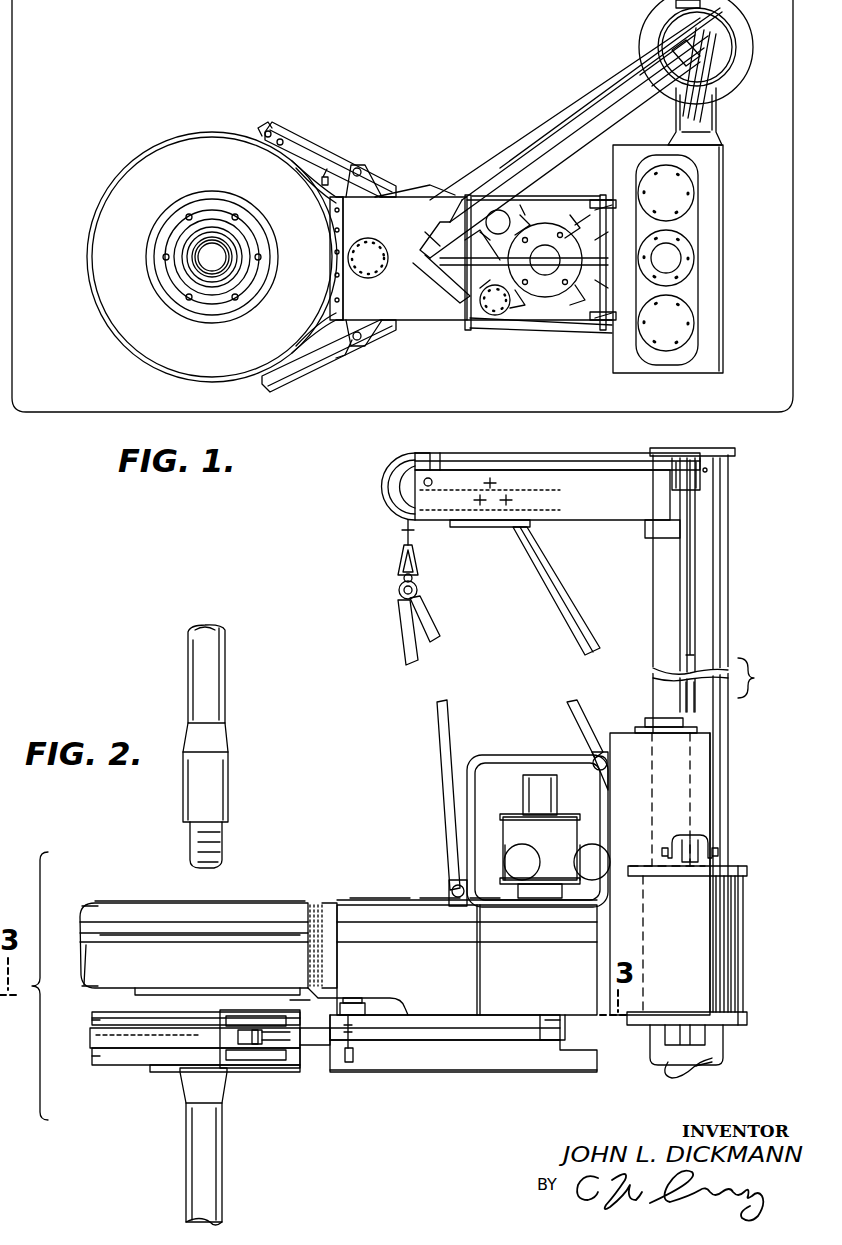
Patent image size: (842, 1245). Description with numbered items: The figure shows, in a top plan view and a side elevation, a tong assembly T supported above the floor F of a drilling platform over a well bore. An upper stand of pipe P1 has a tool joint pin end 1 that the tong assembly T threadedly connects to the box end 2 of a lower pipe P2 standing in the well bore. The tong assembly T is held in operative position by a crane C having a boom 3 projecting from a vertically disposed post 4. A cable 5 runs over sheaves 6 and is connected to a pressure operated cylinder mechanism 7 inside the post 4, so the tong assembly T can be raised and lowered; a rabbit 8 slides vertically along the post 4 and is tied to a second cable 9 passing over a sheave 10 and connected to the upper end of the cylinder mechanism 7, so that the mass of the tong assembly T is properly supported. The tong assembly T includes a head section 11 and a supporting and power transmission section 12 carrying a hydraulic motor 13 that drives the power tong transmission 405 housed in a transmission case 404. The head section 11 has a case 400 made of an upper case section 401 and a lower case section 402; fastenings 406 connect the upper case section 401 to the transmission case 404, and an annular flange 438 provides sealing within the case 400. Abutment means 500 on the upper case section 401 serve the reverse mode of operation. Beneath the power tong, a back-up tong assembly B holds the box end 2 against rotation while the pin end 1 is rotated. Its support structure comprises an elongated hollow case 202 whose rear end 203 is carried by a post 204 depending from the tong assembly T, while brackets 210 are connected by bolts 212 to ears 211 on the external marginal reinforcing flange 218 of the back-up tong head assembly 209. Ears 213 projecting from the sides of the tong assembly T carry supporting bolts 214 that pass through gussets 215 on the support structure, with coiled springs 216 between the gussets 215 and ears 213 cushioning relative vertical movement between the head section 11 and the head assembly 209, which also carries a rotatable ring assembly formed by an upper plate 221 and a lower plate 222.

In FIG. 1, the tool joint pin end 1 is at (212, 257).
In FIG. 2, the tool joint pin end 1 is at (230, 802).
In FIG. 2, the box end 2 is at (182, 1075).
In FIG. 1, the boom 3 is at (510, 162).
In FIG. 2, the boom 3 is at (578, 512).
In FIG. 1, the post 4 is at (732, 45).
In FIG. 2, the post 4 is at (730, 552).
In FIG. 1, the cable 5 is at (560, 135).
In FIG. 2, the cable 5 is at (402, 528).
In FIG. 1, the sheaves 6 is at (680, 40).
In FIG. 2, the sheaves 6 is at (396, 480).
In FIG. 2, the pressure operated cylinder mechanism 7 is at (665, 1070).
In FIG. 2, the rabbit 8 is at (742, 933).
In FIG. 1, the second cable 9 is at (707, 68).
In FIG. 2, the second cable 9 is at (694, 608).
In FIG. 1, the sheave 10 is at (700, 105).
In FIG. 2, the sheave 10 is at (694, 478).
In FIG. 1, the head section 11 is at (208, 128).
In FIG. 2, the head section 11 is at (110, 900).
In FIG. 1, the supporting and power transmission section 12 is at (600, 355).
In FIG. 2, the supporting and power transmission section 12 is at (592, 1012).
In FIG. 1, the hydraulic motor 13 is at (548, 300).
In FIG. 2, the hydraulic motor 13 is at (515, 820).
In FIG. 2, the elongated hollow case 202 is at (458, 1060).
In FIG. 2, the rear end 203 is at (560, 1065).
In FIG. 2, the post 204 is at (528, 995).
In FIG. 2, the back-up tong head assembly 209 is at (88, 1050).
In FIG. 1, the brackets 210 is at (335, 358).
In FIG. 2, the brackets 210 is at (300, 1046).
In FIG. 2, the ears 211 is at (250, 1046).
In FIG. 1, the bolts 212 is at (290, 130).
In FIG. 1, the ears 213 is at (372, 325).
In FIG. 2, the ears 213 is at (365, 1003).
In FIG. 1, the supporting bolts 214 is at (358, 165).
In FIG. 2, the supporting bolts 214 is at (356, 1062).
In FIG. 1, the gussets 215 is at (318, 152).
In FIG. 2, the gussets 215 is at (365, 1038).
In FIG. 2, the coiled springs 216 is at (358, 1022).
In FIG. 2, the external marginal reinforcing flange 218 is at (120, 1067).
In FIG. 2, the upper plate 221 is at (125, 1020).
In FIG. 2, the lower plate 222 is at (168, 1067).
In FIG. 1, the housing or case 400 is at (185, 165).
In FIG. 2, the housing or case 400 is at (292, 928).
In FIG. 1, the upper case section 401 is at (88, 240).
In FIG. 2, the upper case section 401 is at (94, 918).
In FIG. 2, the lower case section 402 is at (90, 970).
In FIG. 1, the transmission case 404 is at (436, 312).
In FIG. 1, the power tong transmission 405 is at (428, 210).
In FIG. 2, the power tong transmission 405 is at (358, 948).
In FIG. 1, the fastenings 406 is at (318, 205).
In FIG. 1, the annular flange 438 is at (163, 290).
In FIG. 2, the annular flange 438 is at (153, 903).
In FIG. 1, the abutment means 500 is at (330, 228).
In FIG. 1, the back-up tong assembly B is at (641, 18).
In FIG. 2, the back-up tong assembly B is at (130, 1067).
In FIG. 1, the crane C is at (612, 72).
In FIG. 2, the crane C is at (640, 530).
In FIG. 1, the floor F is at (42, 416).
In FIG. 1, the tong assembly T is at (400, 190).
In FIG. 2, the tong assembly T is at (398, 905).
In FIG. 1, the upper stand of pipe P1 is at (212, 257).
In FIG. 2, the upper stand of pipe P1 is at (226, 670).
In FIG. 2, the pipe P2 is at (224, 1158).